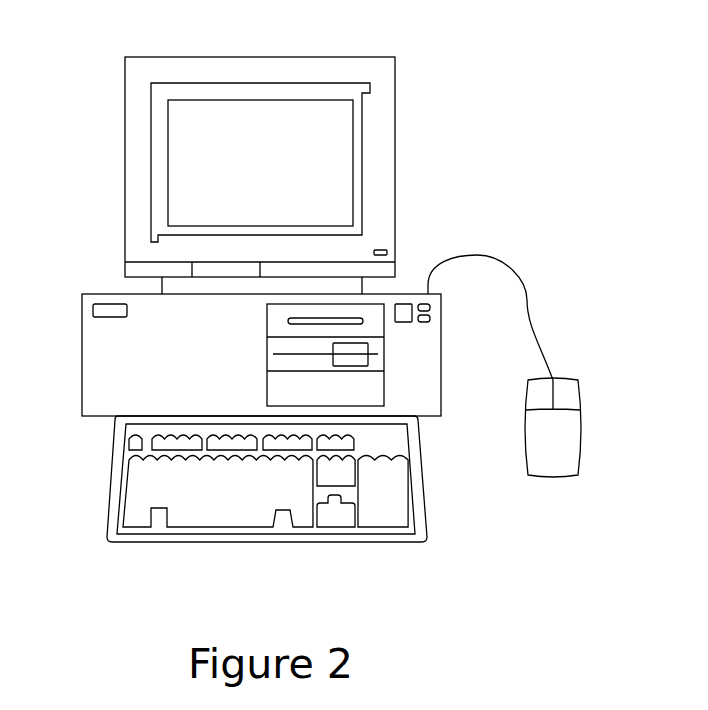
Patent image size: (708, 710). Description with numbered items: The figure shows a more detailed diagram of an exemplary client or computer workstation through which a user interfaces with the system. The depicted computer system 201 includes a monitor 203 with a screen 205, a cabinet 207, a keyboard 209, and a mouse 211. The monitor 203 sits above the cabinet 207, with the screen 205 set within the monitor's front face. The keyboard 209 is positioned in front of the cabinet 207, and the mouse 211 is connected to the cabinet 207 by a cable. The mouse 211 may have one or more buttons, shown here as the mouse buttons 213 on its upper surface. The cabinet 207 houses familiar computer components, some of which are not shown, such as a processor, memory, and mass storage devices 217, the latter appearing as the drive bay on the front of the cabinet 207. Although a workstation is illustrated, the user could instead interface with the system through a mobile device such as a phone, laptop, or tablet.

The computer system 201 is at (409, 42).
The monitor 203 is at (397, 143).
The screen 205 is at (183, 152).
The cabinet 207 is at (108, 297).
The keyboard 209 is at (150, 543).
The mouse 211 is at (553, 462).
The mouse buttons 213 is at (543, 400).
The mass storage devices 217 is at (375, 308).